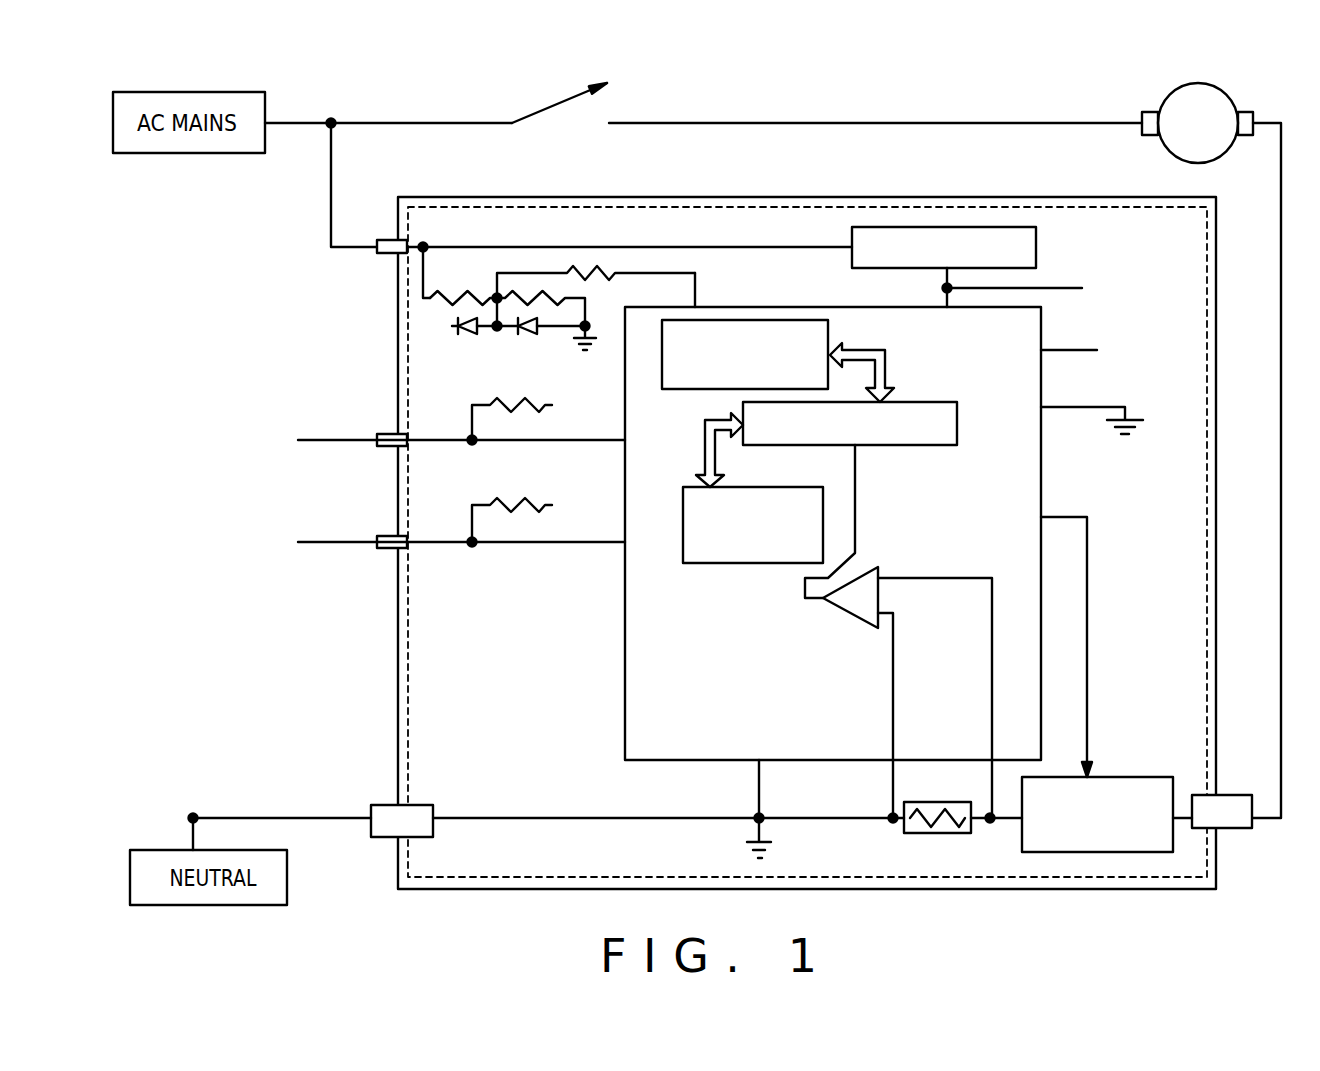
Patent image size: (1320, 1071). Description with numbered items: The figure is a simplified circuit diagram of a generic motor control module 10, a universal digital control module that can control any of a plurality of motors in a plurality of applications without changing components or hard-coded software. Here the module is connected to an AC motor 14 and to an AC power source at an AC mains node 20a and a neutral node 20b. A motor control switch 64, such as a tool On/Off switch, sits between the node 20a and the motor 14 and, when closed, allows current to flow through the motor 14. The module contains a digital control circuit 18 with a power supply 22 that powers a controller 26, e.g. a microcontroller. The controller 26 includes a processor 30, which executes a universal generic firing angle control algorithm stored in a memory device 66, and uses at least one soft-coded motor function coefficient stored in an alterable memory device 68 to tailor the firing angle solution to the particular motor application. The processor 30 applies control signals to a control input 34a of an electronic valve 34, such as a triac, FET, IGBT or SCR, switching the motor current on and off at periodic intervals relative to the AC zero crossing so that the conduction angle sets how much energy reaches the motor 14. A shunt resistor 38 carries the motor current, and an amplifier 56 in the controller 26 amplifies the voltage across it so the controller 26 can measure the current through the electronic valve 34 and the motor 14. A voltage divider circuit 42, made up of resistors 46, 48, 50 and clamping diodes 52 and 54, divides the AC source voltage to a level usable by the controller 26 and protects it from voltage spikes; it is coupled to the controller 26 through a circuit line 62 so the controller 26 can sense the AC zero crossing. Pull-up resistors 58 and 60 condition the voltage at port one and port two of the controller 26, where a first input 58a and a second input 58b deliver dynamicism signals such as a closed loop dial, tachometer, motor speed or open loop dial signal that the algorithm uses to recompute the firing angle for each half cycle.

The generic motor control module 10 is at (398, 378).
The motor 14 is at (1178, 85).
The digital control circuit 18 is at (572, 889).
The AC mains node 20a is at (332, 120).
The neutral node 20b is at (185, 818).
The power supply 22 is at (1038, 240).
The controller 26 is at (884, 582).
The processor 30 is at (905, 447).
The electronic valve 34 is at (1130, 777).
The control input 34a is at (1093, 775).
The shunt resistor 38 is at (930, 835).
The voltage divider circuit 42 is at (605, 304).
The resistor 46 is at (450, 296).
The resistor 48 is at (527, 296).
The resistor 50 is at (590, 270).
The clamping diode 52 is at (468, 335).
The clamping diode 54 is at (523, 333).
The amplifier 56 is at (858, 620).
The pull-up resistor 58 is at (530, 396).
The first input 58a is at (333, 440).
The second input 58b is at (343, 542).
The pull-up resistor 60 is at (500, 503).
The circuit line 62 is at (697, 285).
The motor control switch 64 is at (562, 102).
The memory device 66 is at (660, 362).
The memory device 68 is at (768, 565).